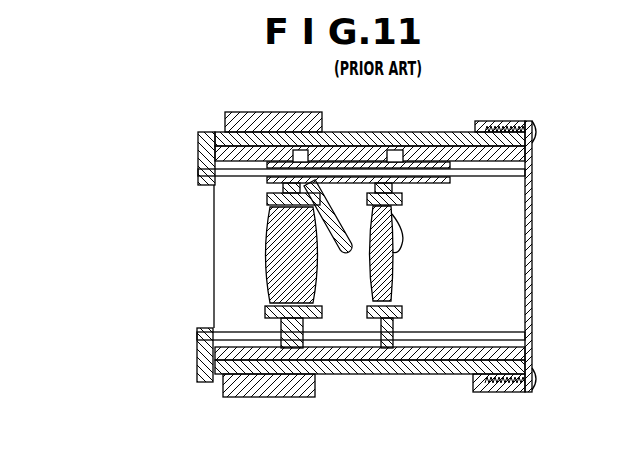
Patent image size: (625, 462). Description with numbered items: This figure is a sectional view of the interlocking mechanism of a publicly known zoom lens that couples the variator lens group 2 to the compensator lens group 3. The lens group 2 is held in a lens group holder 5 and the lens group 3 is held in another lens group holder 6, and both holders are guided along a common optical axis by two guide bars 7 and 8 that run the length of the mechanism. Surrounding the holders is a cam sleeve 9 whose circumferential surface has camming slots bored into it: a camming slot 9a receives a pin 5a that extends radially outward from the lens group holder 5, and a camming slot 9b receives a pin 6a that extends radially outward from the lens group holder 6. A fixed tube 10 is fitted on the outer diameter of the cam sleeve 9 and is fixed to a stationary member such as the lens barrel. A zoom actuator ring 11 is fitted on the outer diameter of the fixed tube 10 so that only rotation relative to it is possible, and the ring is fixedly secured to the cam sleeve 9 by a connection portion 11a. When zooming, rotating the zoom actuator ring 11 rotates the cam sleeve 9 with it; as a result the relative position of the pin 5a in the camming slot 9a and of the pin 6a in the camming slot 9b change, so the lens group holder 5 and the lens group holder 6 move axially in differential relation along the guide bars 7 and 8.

The lens group 2 is at (272, 268).
The lens group 3 is at (394, 271).
The lens group holder 5 is at (320, 308).
The pin 5a is at (300, 150).
The lens group holder 6 is at (395, 325).
The pin 6a is at (395, 150).
The guide bar 7 is at (479, 332).
The guide bar 8 is at (485, 178).
The cam sleeve 9 is at (428, 360).
The camming slot 9a is at (343, 257).
The camming slot 9b is at (402, 240).
The fixed tube 10 is at (456, 132).
The zoom actuator ring 11 is at (267, 397).
The connection portion 11a is at (200, 152).